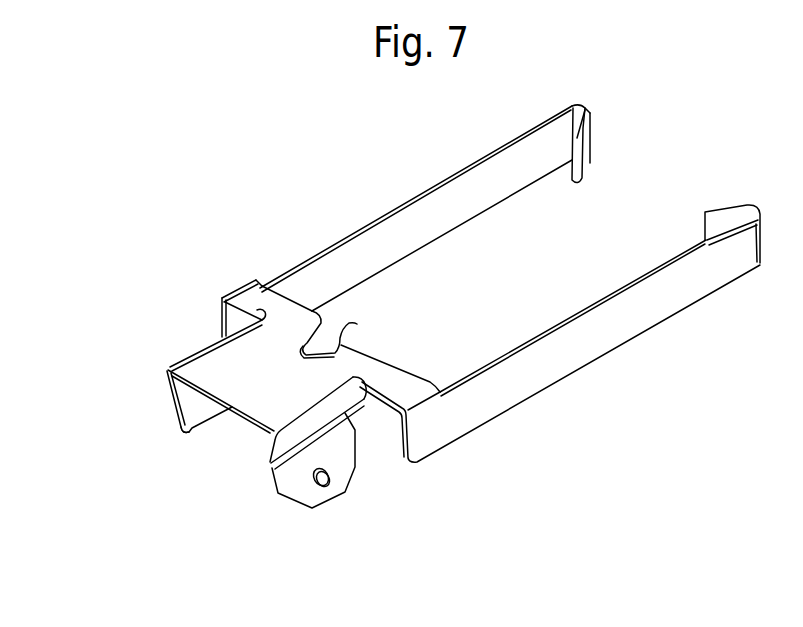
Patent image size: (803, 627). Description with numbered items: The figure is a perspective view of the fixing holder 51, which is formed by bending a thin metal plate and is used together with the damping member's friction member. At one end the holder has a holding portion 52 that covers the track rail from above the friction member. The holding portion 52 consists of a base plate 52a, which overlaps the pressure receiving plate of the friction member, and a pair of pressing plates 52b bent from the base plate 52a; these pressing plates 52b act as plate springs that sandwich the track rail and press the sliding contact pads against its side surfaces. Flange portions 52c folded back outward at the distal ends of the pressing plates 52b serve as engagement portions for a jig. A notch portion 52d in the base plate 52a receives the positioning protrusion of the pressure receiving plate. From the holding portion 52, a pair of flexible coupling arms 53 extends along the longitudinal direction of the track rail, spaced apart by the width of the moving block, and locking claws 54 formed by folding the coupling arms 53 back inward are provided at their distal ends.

The fixing holder 51 is at (296, 240).
The holding portion 52 is at (236, 412).
The base plate 52a is at (220, 363).
The pressing plates 52b is at (170, 412).
The flange portions 52c is at (184, 432).
The notch portion 52d is at (355, 324).
The coupling arms 53 is at (450, 177).
The locking claws 54 is at (590, 163).